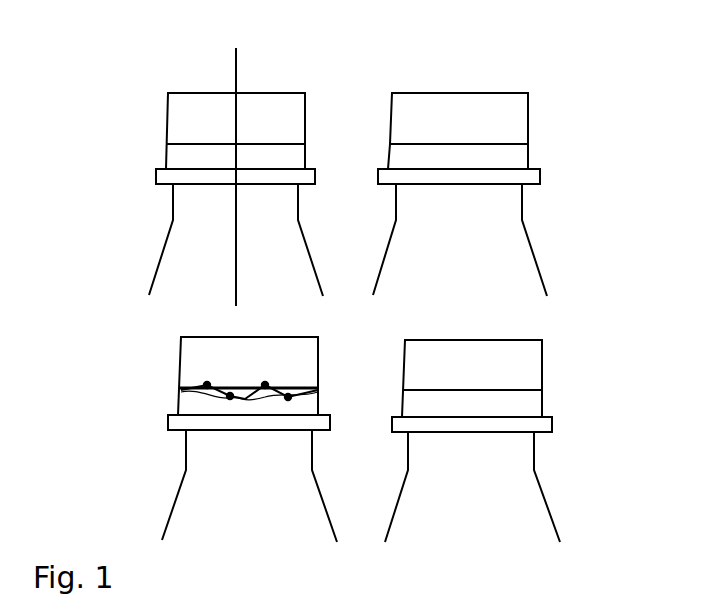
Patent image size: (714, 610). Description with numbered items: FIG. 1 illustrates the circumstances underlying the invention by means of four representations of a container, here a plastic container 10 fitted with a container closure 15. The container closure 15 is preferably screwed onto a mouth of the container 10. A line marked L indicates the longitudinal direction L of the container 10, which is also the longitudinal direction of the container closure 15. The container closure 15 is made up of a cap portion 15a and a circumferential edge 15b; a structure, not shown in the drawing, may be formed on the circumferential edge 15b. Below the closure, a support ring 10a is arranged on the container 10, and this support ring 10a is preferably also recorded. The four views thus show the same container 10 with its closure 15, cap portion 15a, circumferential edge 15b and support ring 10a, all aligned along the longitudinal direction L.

The plastic container 10 is at (518, 259).
The support ring 10a is at (548, 429).
The container closure 15 is at (279, 103).
The cap portion 15a is at (474, 93).
The circumferential edge 15b is at (513, 127).
The longitudinal direction L is at (233, 64).